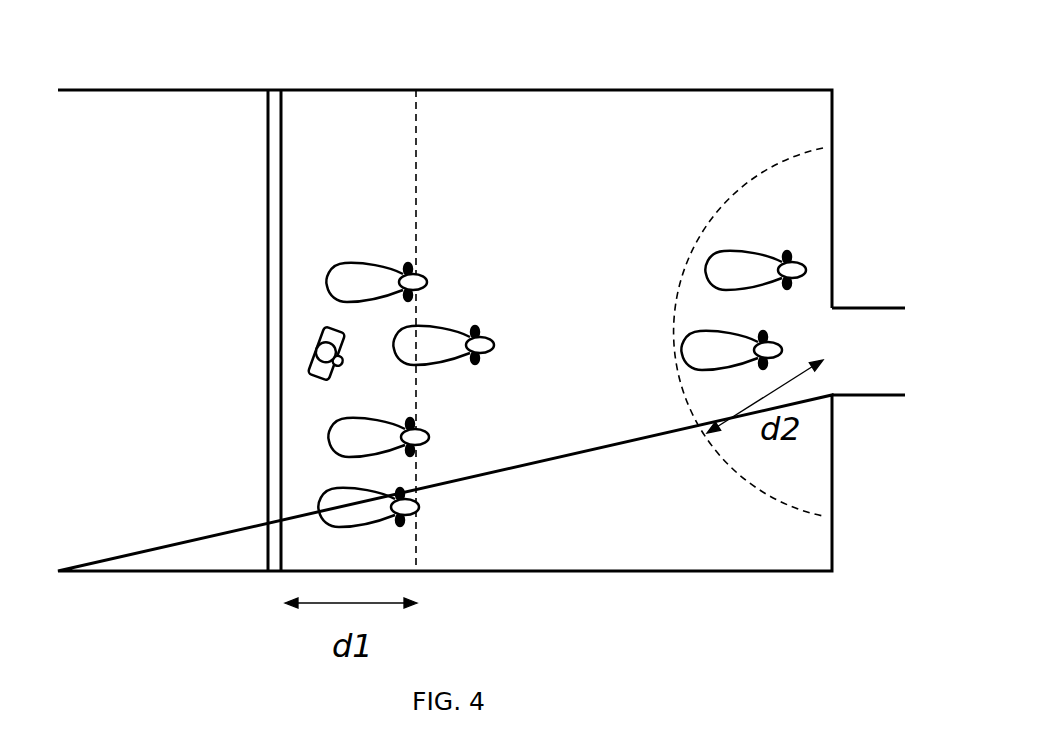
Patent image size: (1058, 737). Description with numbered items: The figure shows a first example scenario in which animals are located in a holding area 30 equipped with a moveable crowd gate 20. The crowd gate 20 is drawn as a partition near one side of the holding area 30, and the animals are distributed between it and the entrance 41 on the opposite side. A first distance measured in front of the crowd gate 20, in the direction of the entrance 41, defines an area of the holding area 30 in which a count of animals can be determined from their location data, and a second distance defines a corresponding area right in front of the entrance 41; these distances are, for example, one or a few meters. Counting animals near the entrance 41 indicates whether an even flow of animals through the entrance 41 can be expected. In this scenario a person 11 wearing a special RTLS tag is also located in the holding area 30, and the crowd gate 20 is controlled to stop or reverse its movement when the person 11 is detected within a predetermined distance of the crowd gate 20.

The person 11 is at (303, 362).
The crowd gate 20 is at (261, 530).
The holding area 30 is at (745, 126).
The entrance 41 is at (853, 340).